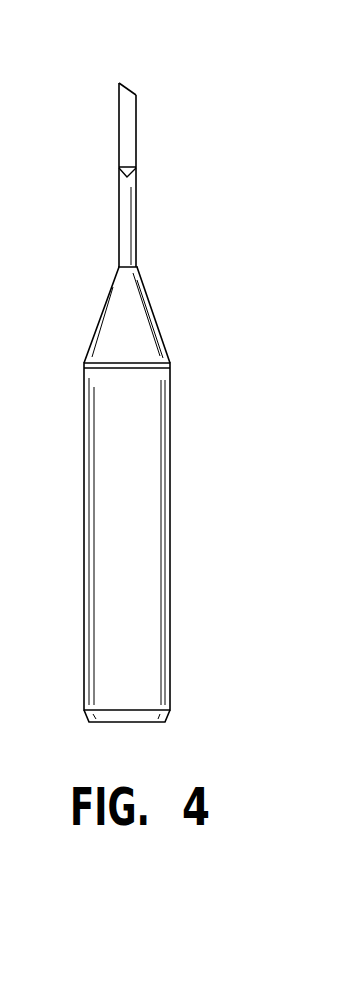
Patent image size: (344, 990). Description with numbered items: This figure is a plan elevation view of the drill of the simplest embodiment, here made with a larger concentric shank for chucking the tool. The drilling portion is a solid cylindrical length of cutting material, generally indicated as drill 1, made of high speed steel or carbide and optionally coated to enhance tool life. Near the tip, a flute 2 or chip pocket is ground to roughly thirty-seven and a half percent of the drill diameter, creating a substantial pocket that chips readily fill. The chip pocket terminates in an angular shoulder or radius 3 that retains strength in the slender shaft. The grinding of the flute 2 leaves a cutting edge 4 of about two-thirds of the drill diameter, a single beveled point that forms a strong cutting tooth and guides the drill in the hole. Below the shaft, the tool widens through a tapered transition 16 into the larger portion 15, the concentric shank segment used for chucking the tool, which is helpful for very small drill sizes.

The drill 1 is at (127, 228).
The flute 2 is at (128, 131).
The angular shoulder 3 is at (126, 175).
The cutting edge 4 is at (136, 94).
The larger portion 15 is at (143, 536).
The conical transition 16 is at (155, 321).